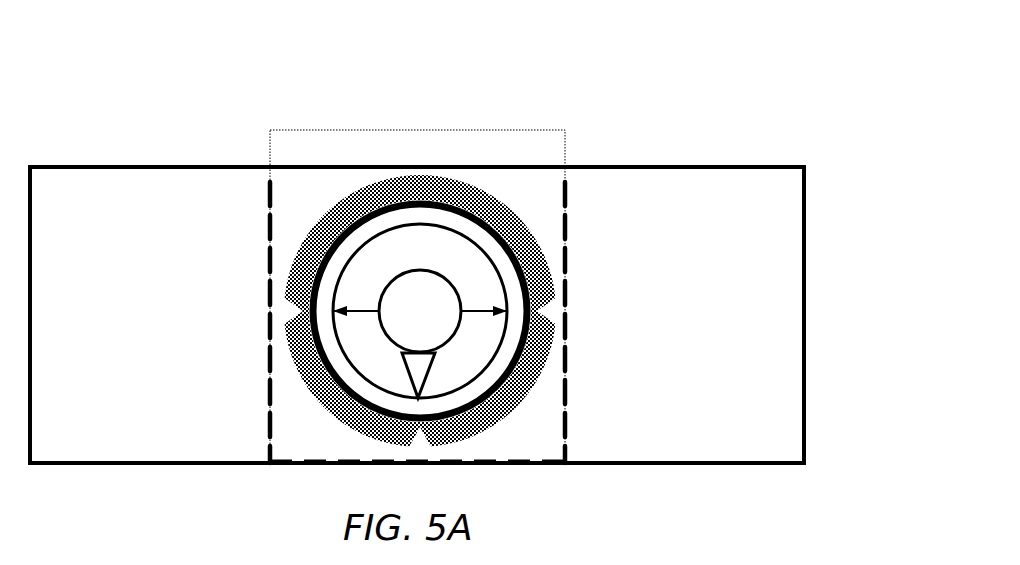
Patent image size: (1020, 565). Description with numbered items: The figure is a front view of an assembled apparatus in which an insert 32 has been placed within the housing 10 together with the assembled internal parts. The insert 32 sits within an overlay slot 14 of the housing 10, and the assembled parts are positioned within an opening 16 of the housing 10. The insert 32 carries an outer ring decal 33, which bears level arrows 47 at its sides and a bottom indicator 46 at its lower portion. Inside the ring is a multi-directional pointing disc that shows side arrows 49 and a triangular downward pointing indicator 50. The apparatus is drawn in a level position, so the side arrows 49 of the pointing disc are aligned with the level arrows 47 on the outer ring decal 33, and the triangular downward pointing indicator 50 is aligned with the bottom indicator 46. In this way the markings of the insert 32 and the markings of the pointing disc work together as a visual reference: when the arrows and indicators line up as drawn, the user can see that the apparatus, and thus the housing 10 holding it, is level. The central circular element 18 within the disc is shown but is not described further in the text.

The housing 10 is at (630, 166).
The overlay slot 14 is at (270, 168).
The insert 32 is at (508, 133).
The central disc 18 is at (483, 290).
The opening 16 is at (345, 397).
The outer ring decal 33 is at (493, 420).
The level arrows 47 is at (287, 311).
The bottom indicator 46 is at (422, 445).
The side arrows 49 is at (480, 313).
The triangular downward pointing indicator 50 is at (417, 368).